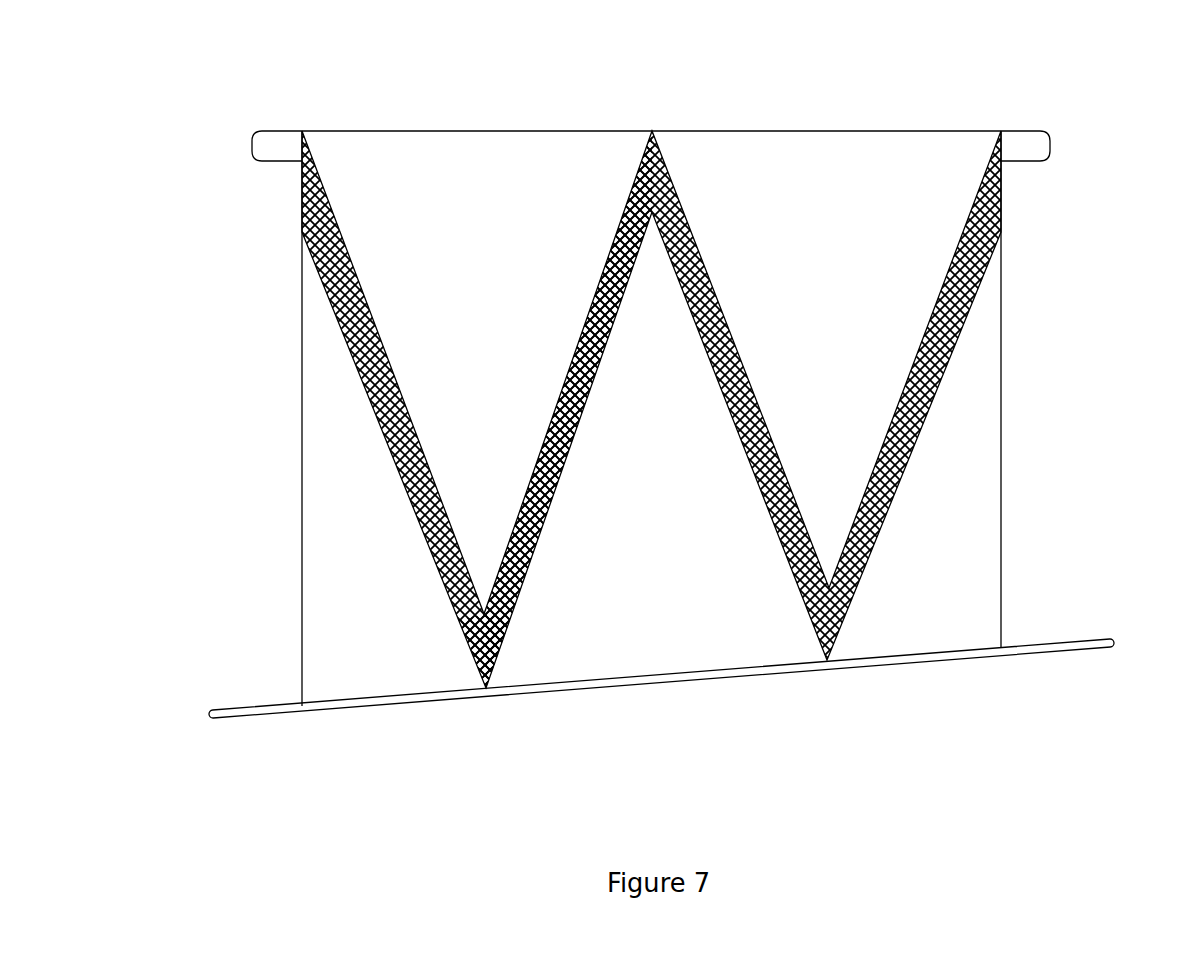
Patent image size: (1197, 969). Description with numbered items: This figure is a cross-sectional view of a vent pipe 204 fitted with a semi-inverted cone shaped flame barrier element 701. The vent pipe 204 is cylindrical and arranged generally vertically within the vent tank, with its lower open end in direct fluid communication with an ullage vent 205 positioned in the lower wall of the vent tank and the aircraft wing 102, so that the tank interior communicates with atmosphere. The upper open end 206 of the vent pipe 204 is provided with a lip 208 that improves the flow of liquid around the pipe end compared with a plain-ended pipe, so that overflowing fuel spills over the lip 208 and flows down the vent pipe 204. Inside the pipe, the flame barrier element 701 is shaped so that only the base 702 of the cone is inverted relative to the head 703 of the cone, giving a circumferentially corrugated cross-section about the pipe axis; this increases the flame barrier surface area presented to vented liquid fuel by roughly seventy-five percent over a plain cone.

The aircraft wing 102 is at (233, 708).
The vent pipe 204 is at (310, 448).
The ullage vent 205 is at (942, 662).
The upper open end 206 is at (946, 131).
The lip 208 is at (265, 157).
The flame barrier element 701 is at (484, 690).
The base of the cone 702 is at (388, 408).
The head of the cone 703 is at (580, 350).